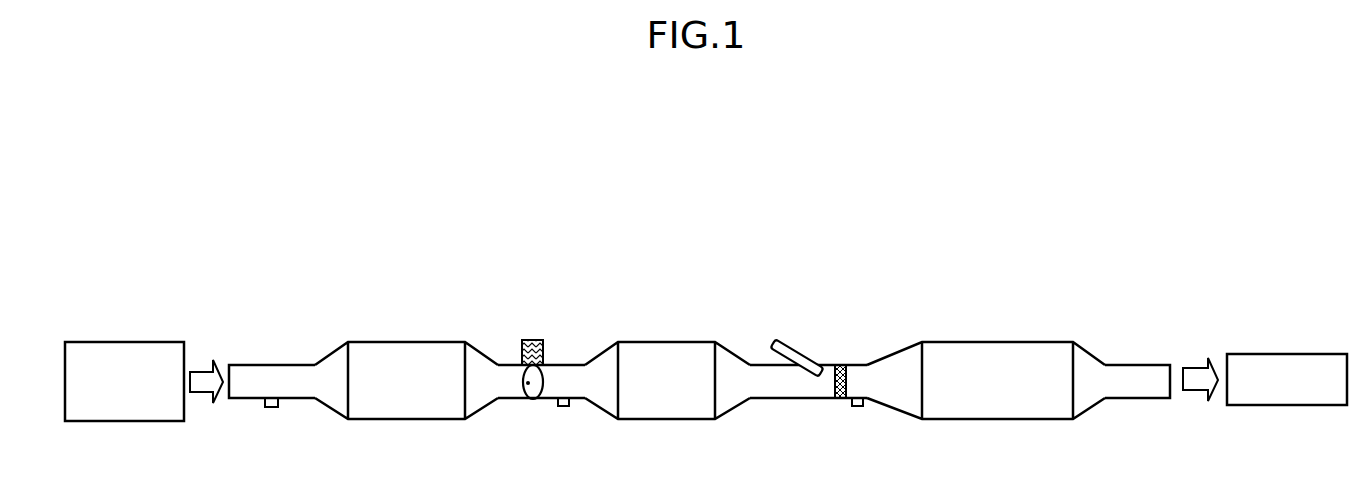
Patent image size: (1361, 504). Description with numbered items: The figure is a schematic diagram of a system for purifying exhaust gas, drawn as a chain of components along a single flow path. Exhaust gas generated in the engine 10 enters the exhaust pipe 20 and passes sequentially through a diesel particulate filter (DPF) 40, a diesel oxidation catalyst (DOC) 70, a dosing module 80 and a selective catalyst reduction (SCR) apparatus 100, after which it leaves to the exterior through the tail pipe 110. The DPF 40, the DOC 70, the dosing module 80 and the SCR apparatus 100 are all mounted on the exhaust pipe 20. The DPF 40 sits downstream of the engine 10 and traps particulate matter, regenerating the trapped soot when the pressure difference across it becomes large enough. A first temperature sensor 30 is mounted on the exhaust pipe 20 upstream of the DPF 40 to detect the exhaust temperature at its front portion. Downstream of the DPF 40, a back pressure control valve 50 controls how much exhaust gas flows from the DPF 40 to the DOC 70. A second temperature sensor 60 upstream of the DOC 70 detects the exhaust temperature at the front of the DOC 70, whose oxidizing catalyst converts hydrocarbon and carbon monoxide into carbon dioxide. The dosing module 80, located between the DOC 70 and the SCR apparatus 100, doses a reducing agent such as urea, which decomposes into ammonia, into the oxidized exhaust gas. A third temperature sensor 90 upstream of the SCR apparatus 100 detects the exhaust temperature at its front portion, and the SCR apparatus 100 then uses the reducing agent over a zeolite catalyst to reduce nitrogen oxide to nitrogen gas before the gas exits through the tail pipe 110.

The engine 10 is at (122, 342).
The exhaust pipe 20 is at (302, 398).
The first temperature sensor 30 is at (273, 407).
The diesel particulate filter (DPF) 40 is at (405, 342).
The back pressure control valve (BPCV) 50 is at (530, 340).
The second temperature sensor 60 is at (566, 406).
The diesel oxidation catalyst (DOC) 70 is at (665, 342).
The dosing module 80 is at (800, 348).
The third temperature sensor 90 is at (857, 406).
The selective catalyst reduction (SCR) apparatus 100 is at (997, 342).
The tail pipe 110 is at (1285, 354).